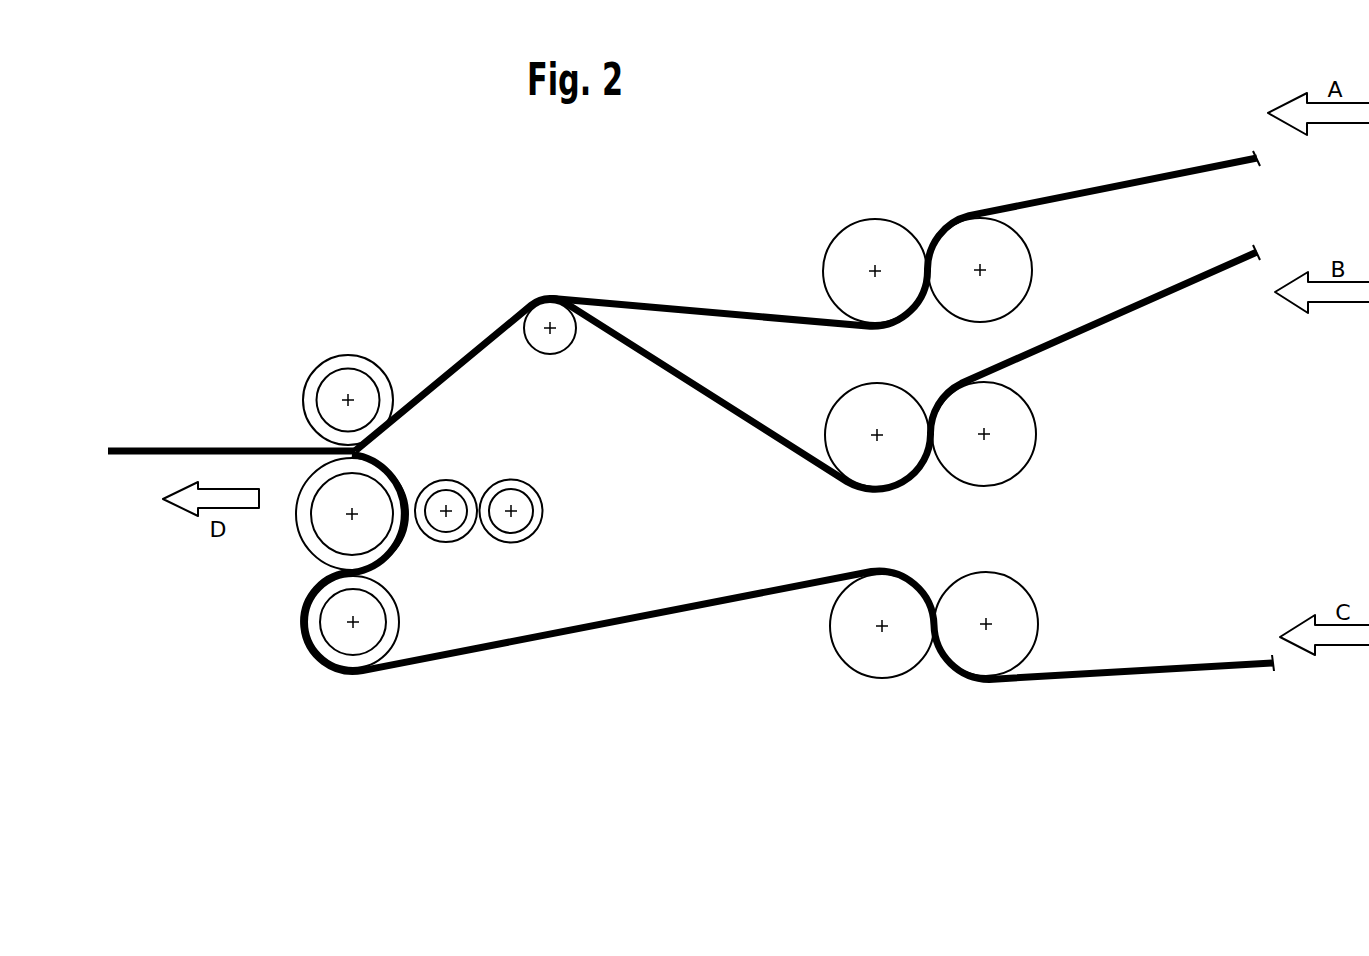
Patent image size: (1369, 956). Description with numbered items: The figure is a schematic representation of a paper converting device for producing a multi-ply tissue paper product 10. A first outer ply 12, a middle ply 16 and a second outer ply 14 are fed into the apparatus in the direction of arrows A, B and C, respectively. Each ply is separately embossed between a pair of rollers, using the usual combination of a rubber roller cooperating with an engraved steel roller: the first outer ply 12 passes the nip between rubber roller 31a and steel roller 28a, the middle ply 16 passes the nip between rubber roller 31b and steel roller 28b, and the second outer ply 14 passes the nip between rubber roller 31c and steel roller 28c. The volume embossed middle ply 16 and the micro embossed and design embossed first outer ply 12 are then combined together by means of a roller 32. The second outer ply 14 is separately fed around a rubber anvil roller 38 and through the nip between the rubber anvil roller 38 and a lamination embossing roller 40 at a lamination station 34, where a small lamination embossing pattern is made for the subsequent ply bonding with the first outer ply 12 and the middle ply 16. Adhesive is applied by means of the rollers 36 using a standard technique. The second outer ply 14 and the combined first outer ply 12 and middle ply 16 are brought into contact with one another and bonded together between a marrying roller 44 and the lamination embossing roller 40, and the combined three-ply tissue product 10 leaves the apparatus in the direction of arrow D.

The multi-ply tissue paper product 10 is at (149, 440).
The first outer ply 12 is at (470, 348).
The second outer ply 14 is at (632, 622).
The middle ply 16 is at (1162, 304).
The steel roller 28a is at (839, 250).
The steel roller 28b is at (851, 418).
The steel roller 28c is at (850, 647).
The rubber roller 31a is at (1017, 264).
The rubber roller 31b is at (1020, 441).
The rubber roller 31c is at (1023, 615).
The roller 32 is at (565, 340).
The lamination station 34 is at (274, 400).
The rollers 36 is at (507, 492).
The rubber anvil roller 38 is at (336, 633).
The lamination embossing roller 40 is at (328, 525).
The marrying roller 44 is at (336, 379).